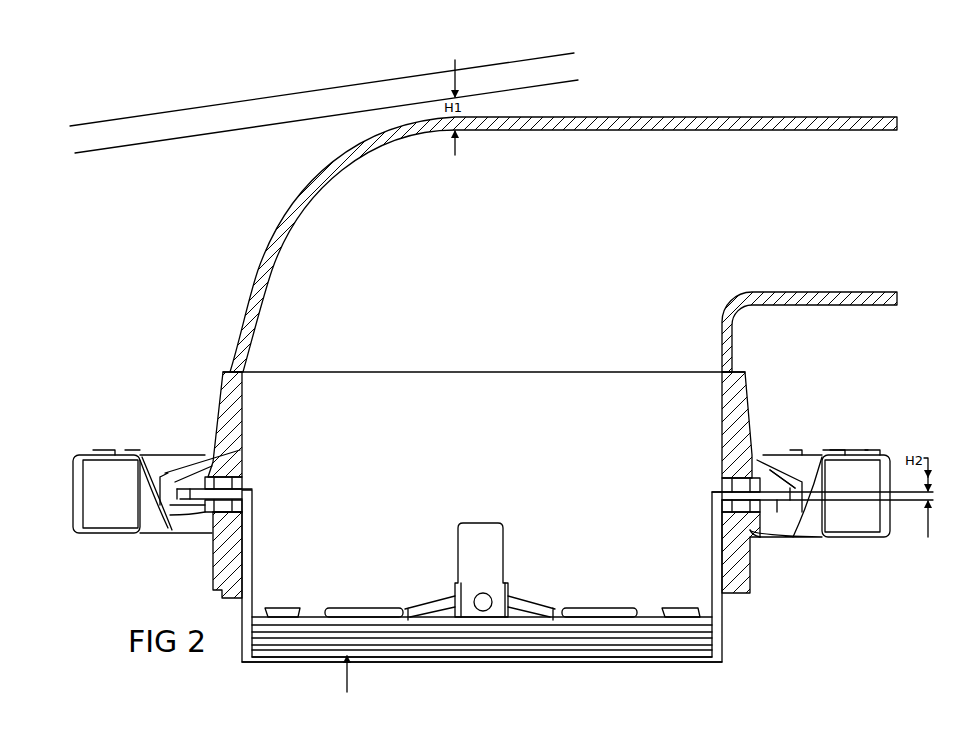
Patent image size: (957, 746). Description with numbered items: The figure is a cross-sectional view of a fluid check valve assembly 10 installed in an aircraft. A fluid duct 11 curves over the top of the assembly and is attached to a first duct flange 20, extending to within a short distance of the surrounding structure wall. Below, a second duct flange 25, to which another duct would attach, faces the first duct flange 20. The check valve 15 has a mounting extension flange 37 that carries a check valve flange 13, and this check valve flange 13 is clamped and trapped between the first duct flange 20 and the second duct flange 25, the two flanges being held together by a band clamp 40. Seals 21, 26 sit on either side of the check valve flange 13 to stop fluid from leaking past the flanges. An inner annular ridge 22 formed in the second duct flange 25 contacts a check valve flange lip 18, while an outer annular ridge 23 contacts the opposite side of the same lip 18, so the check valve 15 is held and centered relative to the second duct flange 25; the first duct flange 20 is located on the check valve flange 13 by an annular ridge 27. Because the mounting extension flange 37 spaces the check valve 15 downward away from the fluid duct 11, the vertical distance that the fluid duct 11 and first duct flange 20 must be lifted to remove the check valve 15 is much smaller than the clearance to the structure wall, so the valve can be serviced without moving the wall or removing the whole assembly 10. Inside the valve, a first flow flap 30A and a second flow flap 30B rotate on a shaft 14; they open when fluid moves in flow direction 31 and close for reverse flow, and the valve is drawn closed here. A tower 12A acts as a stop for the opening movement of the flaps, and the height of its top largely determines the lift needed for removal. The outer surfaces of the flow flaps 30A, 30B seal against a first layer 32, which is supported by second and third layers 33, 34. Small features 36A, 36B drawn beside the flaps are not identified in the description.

The fluid check valve assembly 10 is at (758, 376).
The fluid duct 11 is at (287, 218).
The tower 12A is at (487, 530).
The check valve flange 13 is at (172, 452).
The shaft 14 is at (484, 600).
The check valve 15 is at (575, 664).
The check valve flange lip 18 is at (780, 505).
The first duct flange 20 is at (742, 396).
The seal 21 is at (222, 486).
The inner annular ridge 22 is at (200, 508).
The outer annular ridge 23 is at (166, 527).
The second duct flange 25 is at (745, 575).
The seal 26 is at (222, 520).
The annular ridge 27 is at (788, 478).
The first flow flap 30A is at (350, 610).
The second flow flap 30B is at (610, 613).
The flow direction 31 is at (347, 680).
The first layer 32 is at (318, 640).
The second layer 33 is at (443, 648).
The third layer 34 is at (495, 655).
The contact A 36A is at (452, 600).
The contact B 36B is at (515, 605).
The mounting extension flange 37 is at (724, 620).
The band clamp 40 is at (868, 515).